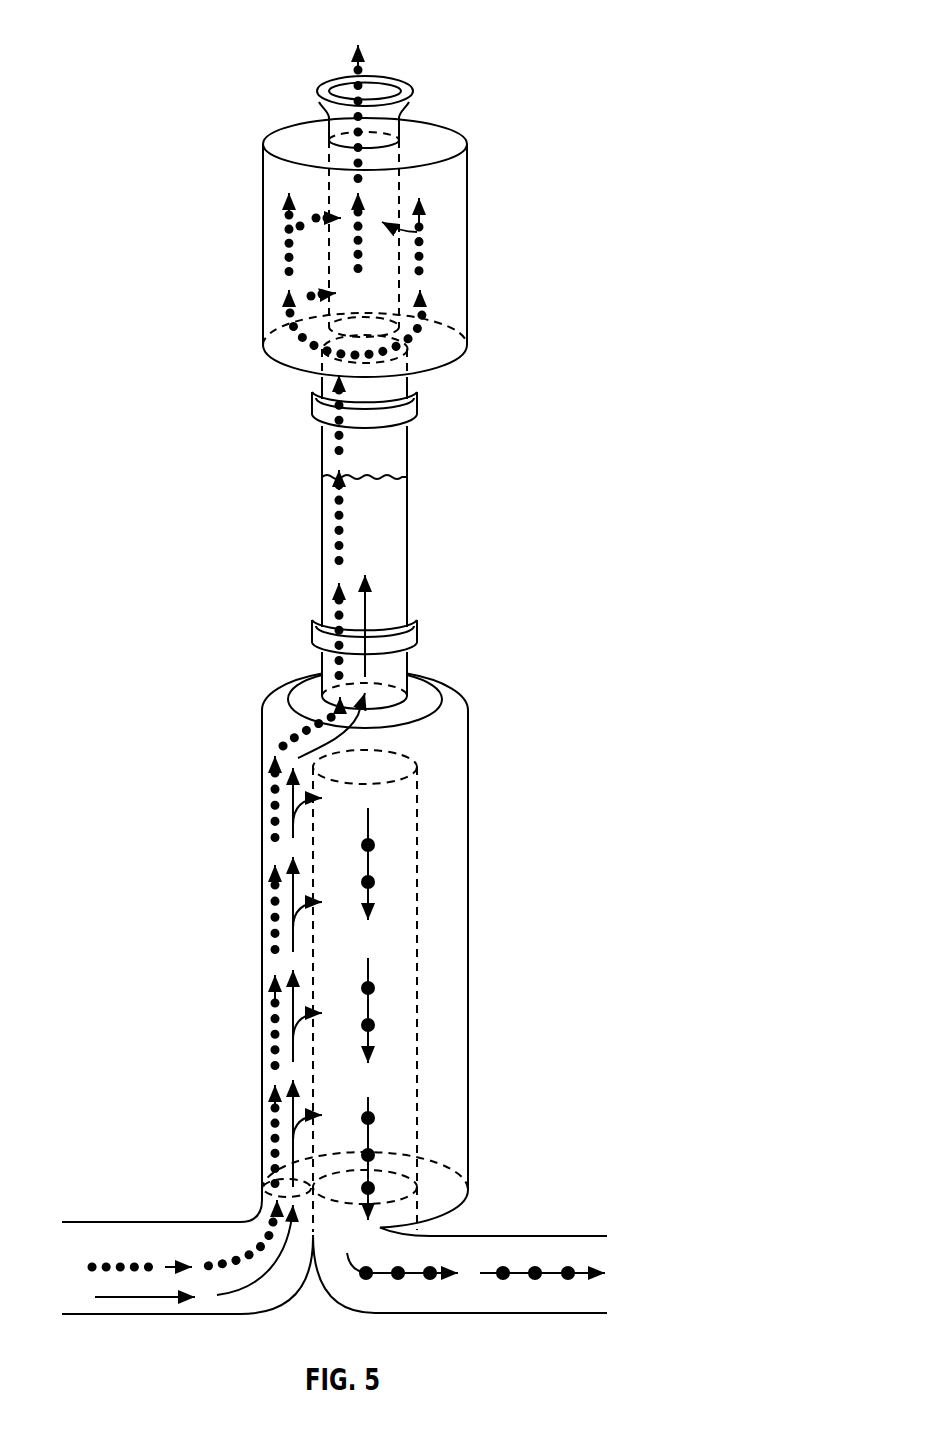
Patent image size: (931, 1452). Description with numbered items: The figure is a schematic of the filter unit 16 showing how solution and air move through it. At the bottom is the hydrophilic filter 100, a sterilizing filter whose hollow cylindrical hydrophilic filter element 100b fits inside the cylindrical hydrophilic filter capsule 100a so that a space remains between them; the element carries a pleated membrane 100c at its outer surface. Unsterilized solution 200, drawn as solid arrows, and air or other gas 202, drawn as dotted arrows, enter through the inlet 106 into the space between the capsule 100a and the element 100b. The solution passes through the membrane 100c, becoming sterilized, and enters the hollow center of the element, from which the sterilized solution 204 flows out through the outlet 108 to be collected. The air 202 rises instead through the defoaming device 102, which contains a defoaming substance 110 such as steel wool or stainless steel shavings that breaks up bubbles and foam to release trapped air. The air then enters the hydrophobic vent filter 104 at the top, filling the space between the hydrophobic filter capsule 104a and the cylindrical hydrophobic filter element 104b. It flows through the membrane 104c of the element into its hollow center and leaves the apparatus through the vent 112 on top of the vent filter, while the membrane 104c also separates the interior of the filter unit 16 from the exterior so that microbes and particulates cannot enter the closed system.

The filter unit 16 is at (535, 80).
The hydrophilic filter 100 is at (207, 942).
The hydrophilic filter capsule 100a is at (468, 1053).
The hydrophilic filter element 100b is at (422, 1035).
The membrane 100c is at (417, 933).
The defoaming device 102 is at (247, 543).
The hydrophobic vent filter 104 is at (205, 248).
The hydrophobic filter capsule 104a is at (467, 262).
The hydrophobic filter element 104b is at (403, 185).
The membrane 104c is at (380, 297).
The inlet 106 is at (160, 1305).
The outlet 108 is at (502, 1292).
The defoaming substance 110 is at (384, 502).
The vent 112 is at (385, 80).
The unsterilized solution 200 is at (368, 612).
The air or other gas 202 is at (268, 796).
The sterilized solution 204 is at (372, 862).